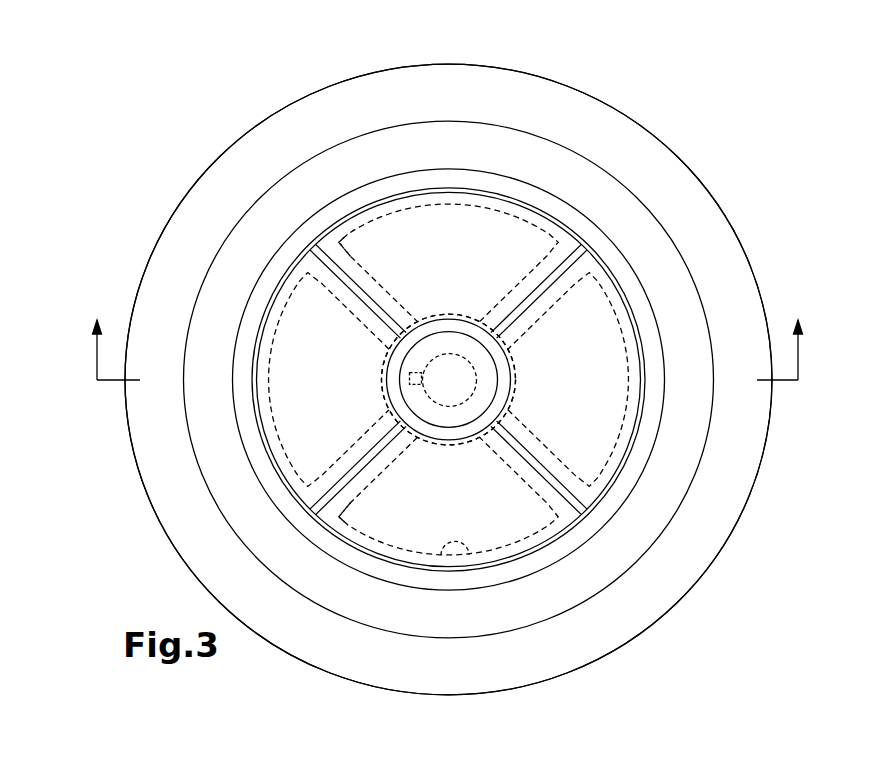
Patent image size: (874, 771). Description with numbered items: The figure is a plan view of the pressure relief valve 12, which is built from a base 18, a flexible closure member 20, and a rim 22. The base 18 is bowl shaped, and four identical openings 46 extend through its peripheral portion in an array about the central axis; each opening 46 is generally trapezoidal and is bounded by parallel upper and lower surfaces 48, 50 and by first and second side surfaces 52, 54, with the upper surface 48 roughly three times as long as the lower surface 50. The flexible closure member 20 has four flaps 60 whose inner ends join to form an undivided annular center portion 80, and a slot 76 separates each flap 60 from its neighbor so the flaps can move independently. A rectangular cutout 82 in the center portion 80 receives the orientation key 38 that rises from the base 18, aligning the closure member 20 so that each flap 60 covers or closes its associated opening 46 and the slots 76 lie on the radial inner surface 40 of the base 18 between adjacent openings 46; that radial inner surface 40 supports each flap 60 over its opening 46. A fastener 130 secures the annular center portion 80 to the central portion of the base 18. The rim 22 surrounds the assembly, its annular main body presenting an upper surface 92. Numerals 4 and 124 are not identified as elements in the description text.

The pressure relief valve 12 is at (163, 142).
The rim 22 is at (197, 230).
The outer wall 124 is at (745, 428).
The upper surface 92 is at (645, 527).
The section line 4- 4 is at (447, 337).
The slot 76 is at (303, 235).
The annular center portion 80 is at (500, 350).
The first side surface 52 is at (548, 543).
The fastener 130 is at (409, 407).
The rectangular cutout 82 is at (410, 373).
The orientation key 38 is at (417, 368).
The base 18 is at (525, 276).
The radial inner surface 40 is at (347, 250).
The flexible closure member 20 is at (587, 340).
The lower surface 50 is at (440, 450).
The second side surface 54 is at (340, 532).
The upper surface 48 is at (470, 556).
The openings 46 is at (428, 238).
The flaps 60 is at (467, 233).